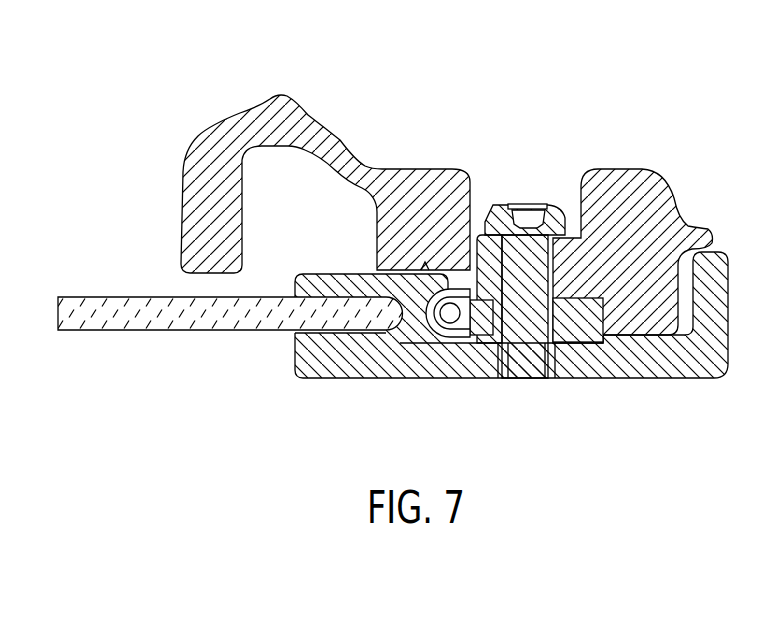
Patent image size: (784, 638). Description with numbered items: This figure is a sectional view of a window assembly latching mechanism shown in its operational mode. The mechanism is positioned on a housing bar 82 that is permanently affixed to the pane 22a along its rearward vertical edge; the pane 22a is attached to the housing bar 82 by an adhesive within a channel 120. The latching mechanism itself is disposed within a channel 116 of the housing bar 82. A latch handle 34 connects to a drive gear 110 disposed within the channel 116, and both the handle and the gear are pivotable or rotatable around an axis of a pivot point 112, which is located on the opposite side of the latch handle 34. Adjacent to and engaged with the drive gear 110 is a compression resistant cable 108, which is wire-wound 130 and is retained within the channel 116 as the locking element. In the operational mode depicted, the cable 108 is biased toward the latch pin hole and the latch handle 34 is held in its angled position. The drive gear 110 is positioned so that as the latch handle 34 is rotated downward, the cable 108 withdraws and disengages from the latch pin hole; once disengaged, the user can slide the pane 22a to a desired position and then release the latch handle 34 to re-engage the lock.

The pane 22a is at (192, 332).
The latch handle 34 is at (352, 147).
The housing bar 82 is at (729, 365).
The cable 108 is at (432, 318).
The drive gear 110 is at (585, 303).
The pivot point 112 is at (552, 203).
The channel 116 is at (440, 318).
The channel 120 is at (362, 335).
The wire-wound 130 is at (457, 300).